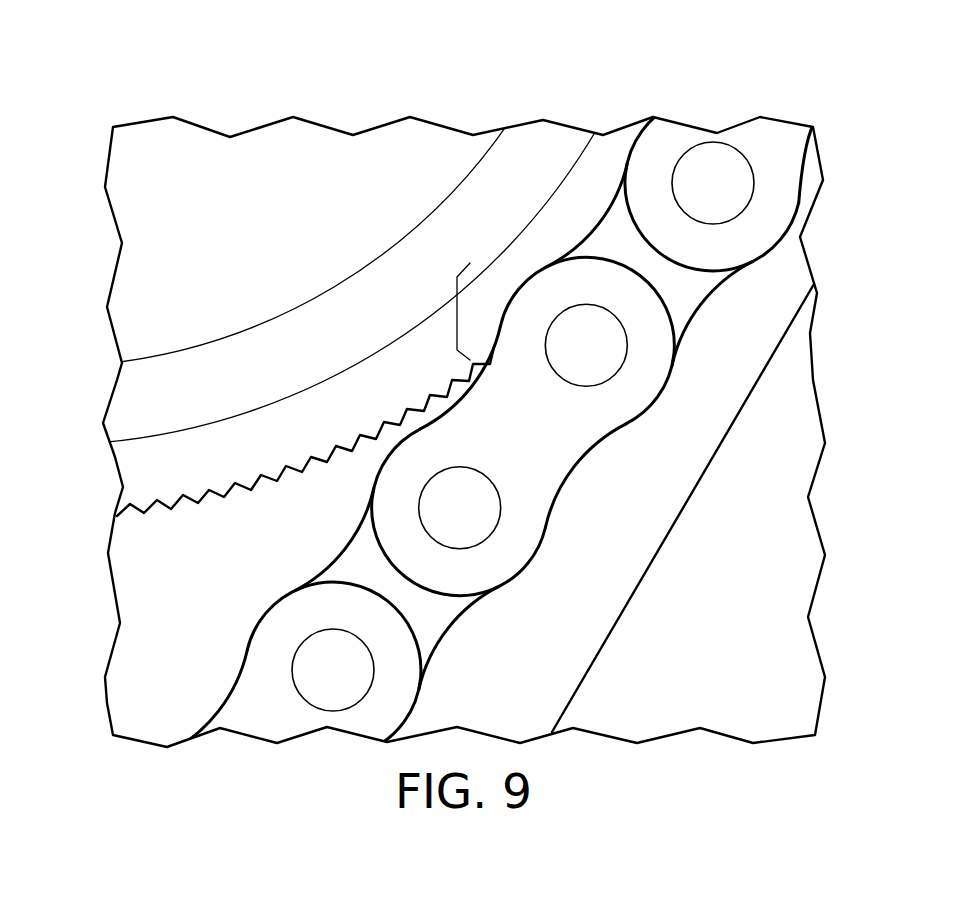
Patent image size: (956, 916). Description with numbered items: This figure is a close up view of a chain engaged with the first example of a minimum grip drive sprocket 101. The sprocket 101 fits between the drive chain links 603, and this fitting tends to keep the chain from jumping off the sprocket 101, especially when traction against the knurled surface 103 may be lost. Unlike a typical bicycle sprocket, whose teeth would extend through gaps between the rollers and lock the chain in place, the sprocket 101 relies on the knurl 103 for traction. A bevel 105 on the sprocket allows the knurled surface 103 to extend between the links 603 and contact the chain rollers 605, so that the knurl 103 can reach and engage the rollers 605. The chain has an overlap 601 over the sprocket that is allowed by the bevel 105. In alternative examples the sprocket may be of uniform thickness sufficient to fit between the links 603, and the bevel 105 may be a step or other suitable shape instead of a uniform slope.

The minimum grip drive sprocket 101 is at (253, 177).
The knurled surface 103 is at (213, 497).
The bevel 105 is at (148, 467).
The overlap 601 is at (457, 314).
The drive chain links 603 is at (540, 437).
The chain rollers 605 is at (600, 350).